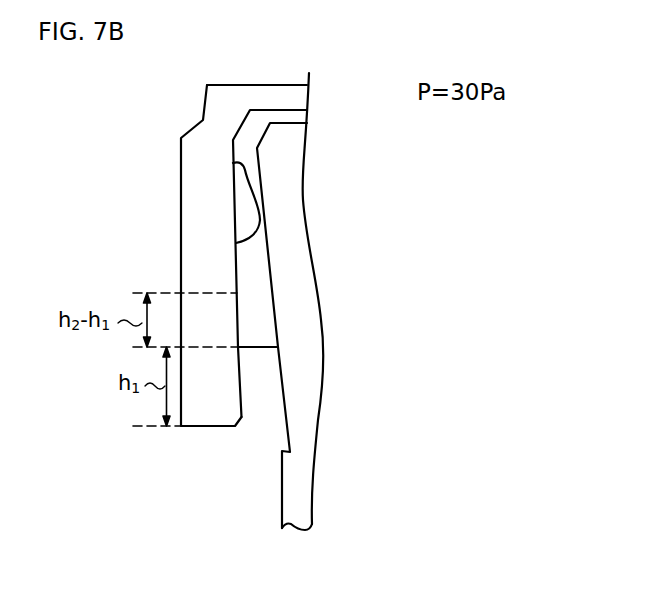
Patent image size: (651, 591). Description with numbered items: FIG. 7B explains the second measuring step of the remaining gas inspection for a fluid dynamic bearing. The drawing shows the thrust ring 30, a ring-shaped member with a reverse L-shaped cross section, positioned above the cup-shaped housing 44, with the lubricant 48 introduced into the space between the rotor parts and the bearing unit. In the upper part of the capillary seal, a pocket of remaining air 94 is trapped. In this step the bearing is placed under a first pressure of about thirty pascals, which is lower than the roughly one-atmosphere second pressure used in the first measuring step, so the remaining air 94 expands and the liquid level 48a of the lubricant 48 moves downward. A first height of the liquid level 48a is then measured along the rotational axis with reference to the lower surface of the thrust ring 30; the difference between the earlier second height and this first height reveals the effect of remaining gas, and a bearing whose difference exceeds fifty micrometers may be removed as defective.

The thrust ring 30 is at (220, 102).
The lubricant 48 is at (262, 124).
The liquid level 48a is at (258, 351).
The remaining air 94 is at (245, 210).
The housing 44 is at (287, 170).